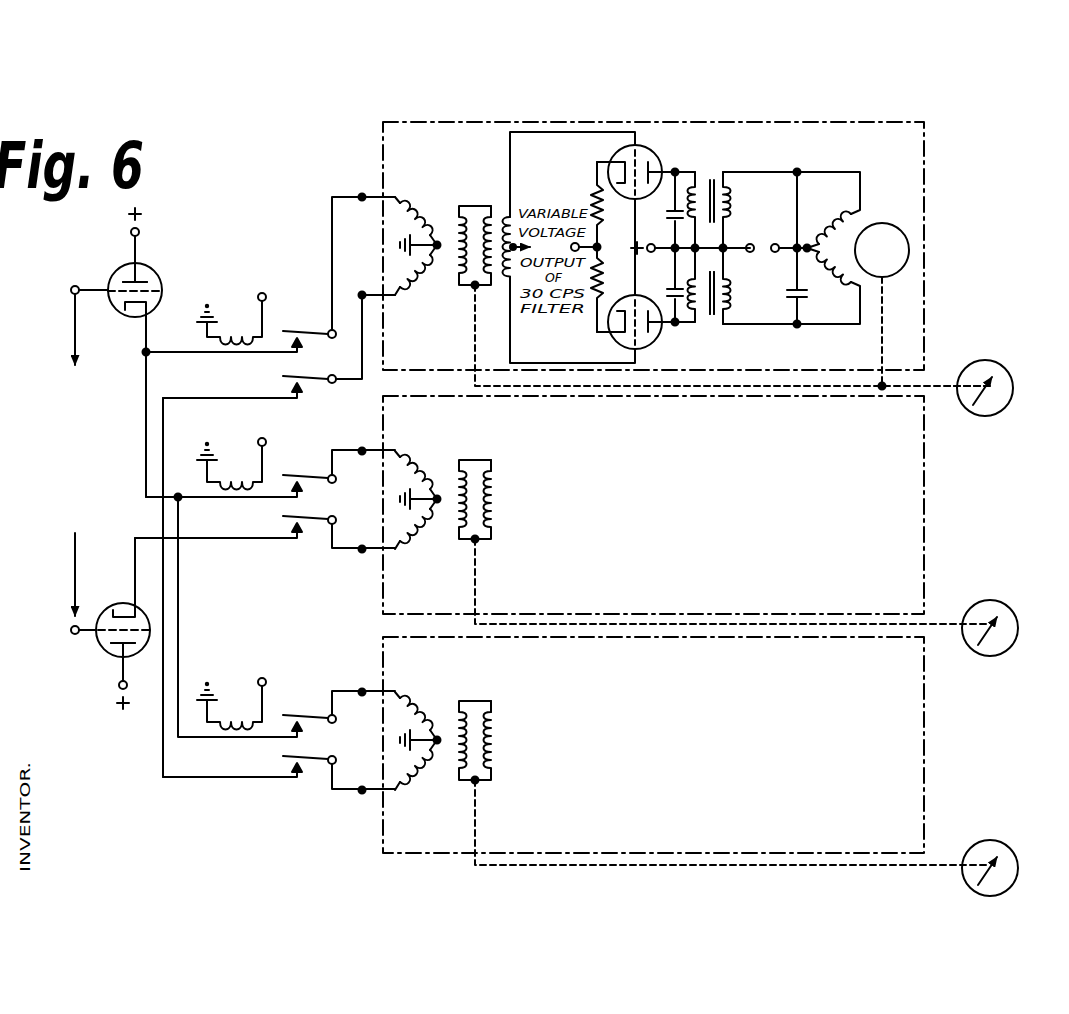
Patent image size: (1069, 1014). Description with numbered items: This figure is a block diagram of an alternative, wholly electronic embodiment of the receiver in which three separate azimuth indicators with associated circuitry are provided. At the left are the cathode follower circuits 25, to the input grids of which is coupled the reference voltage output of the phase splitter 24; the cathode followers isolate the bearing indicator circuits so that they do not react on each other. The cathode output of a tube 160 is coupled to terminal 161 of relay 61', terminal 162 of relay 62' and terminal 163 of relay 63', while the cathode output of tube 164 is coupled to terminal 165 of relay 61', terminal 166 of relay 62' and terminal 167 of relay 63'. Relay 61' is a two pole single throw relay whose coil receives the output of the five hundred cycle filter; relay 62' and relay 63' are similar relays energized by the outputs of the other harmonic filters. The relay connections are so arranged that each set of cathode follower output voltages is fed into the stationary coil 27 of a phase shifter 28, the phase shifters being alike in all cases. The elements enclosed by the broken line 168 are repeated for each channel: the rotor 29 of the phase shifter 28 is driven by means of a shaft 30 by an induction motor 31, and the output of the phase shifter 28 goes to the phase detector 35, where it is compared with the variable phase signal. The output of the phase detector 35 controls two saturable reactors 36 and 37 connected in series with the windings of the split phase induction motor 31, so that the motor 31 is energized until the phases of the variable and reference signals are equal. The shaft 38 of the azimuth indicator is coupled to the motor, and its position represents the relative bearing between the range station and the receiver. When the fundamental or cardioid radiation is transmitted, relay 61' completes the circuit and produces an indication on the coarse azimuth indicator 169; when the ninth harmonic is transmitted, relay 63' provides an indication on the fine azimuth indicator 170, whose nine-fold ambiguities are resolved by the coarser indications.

The phase splitter 24 is at (79, 455).
The cathode follower circuits 25 is at (105, 262).
The tube 160 is at (159, 283).
The tube 164 is at (111, 608).
The relay 61' is at (231, 299).
The relay 62' is at (232, 447).
The relay 63' is at (232, 687).
The terminal 161 is at (226, 355).
The terminal 162 is at (256, 499).
The terminal 163 is at (249, 740).
The terminal 165 is at (211, 401).
The terminal 166 is at (256, 540).
The terminal 167 is at (232, 779).
The broken line 168 is at (383, 140).
The stationary coil 27 is at (421, 224).
The phase shifter 28 is at (456, 184).
The rotor 29 is at (479, 206).
The shaft 30 is at (475, 386).
The phase detector 35 is at (627, 210).
The saturable reactor 36 is at (712, 315).
The saturable reactor 37 is at (712, 180).
The induction motor 31 is at (886, 231).
The shaft 38 is at (947, 388).
The coarse azimuth indicator 169 is at (1000, 412).
The fine azimuth indicator 170 is at (966, 882).